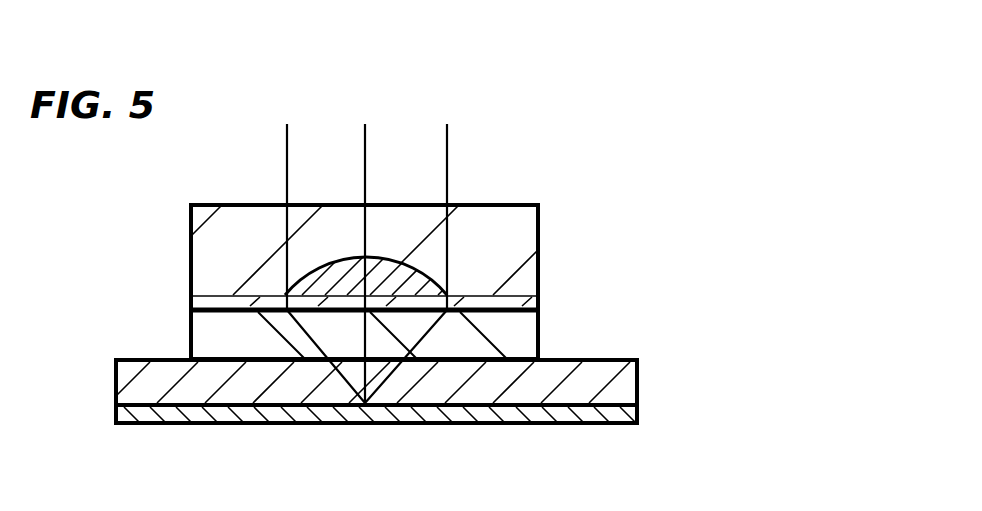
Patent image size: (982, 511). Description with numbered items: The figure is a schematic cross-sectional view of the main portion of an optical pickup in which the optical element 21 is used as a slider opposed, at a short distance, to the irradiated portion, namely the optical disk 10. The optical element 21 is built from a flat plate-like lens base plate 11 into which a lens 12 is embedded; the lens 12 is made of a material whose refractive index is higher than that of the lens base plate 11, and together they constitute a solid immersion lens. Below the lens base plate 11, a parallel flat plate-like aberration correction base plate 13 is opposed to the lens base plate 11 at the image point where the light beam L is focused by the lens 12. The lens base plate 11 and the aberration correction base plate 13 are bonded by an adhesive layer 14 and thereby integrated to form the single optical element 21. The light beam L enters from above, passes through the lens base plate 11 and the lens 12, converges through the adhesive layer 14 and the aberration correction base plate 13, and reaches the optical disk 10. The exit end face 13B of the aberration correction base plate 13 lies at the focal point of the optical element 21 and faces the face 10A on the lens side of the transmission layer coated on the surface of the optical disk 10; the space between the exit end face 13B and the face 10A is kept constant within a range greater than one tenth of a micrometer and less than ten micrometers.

The light beam L is at (447, 162).
The optical element 21 is at (625, 208).
The lens base plate 11 is at (540, 228).
The lens 12 is at (418, 291).
The adhesive layer 14 is at (540, 305).
The aberration correction base plate 13 is at (540, 343).
The exit end face 13B is at (207, 348).
The optical disk 10 is at (637, 377).
The face of the transmission layer 10A is at (237, 376).